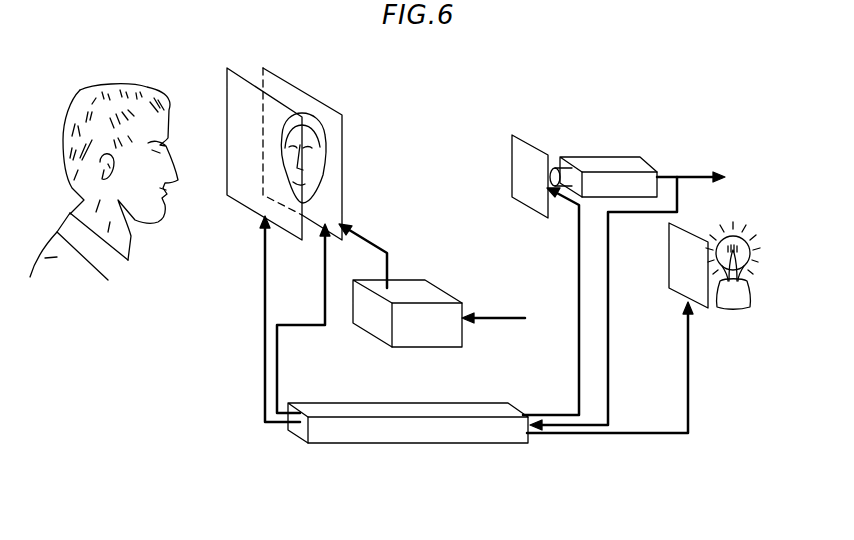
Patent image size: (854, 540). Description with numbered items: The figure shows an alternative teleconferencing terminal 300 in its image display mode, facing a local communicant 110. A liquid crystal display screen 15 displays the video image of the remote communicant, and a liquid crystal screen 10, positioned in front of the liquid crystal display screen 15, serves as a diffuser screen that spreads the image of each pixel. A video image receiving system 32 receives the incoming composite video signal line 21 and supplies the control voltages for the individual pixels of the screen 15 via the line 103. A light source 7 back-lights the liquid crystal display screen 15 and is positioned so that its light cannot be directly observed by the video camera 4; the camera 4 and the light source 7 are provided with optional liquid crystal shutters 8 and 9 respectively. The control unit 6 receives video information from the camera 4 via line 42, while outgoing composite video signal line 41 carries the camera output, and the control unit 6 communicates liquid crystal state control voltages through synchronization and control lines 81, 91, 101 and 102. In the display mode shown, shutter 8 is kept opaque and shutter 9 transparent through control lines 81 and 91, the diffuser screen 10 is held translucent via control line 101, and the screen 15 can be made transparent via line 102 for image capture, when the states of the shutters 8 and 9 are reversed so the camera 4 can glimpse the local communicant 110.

The local communicant 110 is at (92, 78).
The liquid crystal screen 10 is at (232, 80).
The liquid crystal display screen 15 is at (268, 80).
The control line 101 is at (265, 275).
The control line 102 is at (325, 307).
The line 103 is at (370, 240).
The video image receiving system 32 is at (422, 287).
The incoming composite video signal line 21 is at (502, 318).
The terminal 300 is at (546, 108).
The liquid crystal shutter 8 is at (517, 158).
The video camera 4 is at (600, 163).
The outgoing composite video signal line 41 is at (693, 175).
The control line 81 is at (578, 252).
The outgoing composite video signal line 42 is at (609, 357).
The liquid crystal shutter 9 is at (683, 292).
The light source 7 is at (748, 297).
The control line 91 is at (690, 370).
The control unit 6 is at (332, 408).